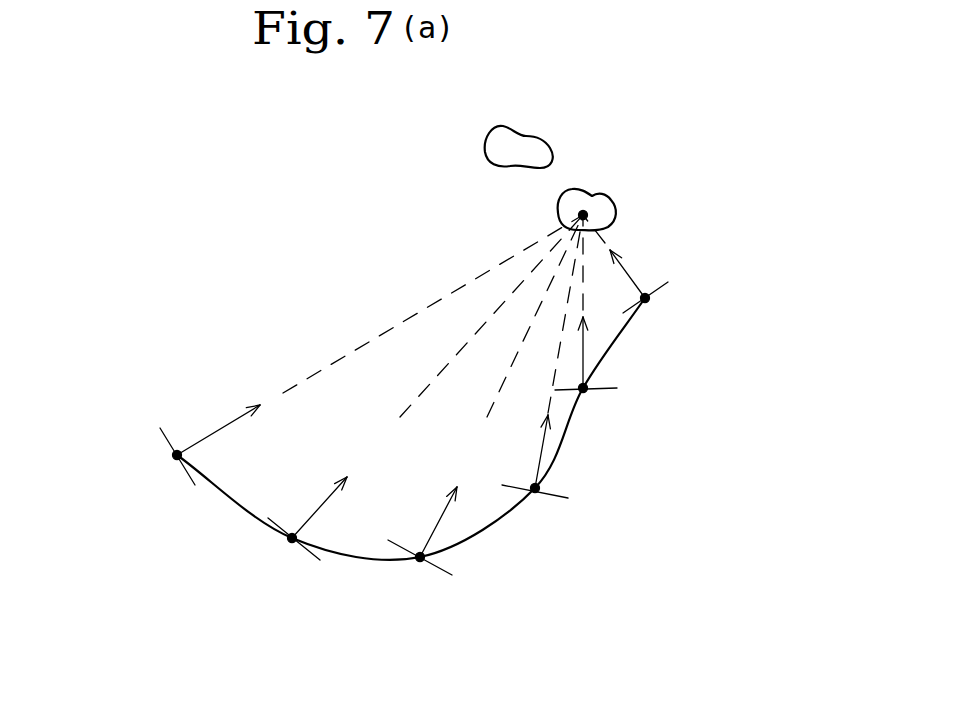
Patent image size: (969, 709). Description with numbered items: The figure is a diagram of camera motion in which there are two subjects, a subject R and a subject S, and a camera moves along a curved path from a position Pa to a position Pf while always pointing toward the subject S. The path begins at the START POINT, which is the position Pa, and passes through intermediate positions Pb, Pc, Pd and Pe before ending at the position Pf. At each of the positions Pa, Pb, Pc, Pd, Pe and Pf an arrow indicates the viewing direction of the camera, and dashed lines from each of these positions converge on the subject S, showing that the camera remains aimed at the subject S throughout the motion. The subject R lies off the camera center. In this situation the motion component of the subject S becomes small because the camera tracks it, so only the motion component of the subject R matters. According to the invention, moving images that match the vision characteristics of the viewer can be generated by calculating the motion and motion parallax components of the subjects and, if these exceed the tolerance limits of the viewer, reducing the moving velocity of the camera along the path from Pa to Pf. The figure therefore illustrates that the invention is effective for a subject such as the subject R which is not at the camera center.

The camera start position Pa is at (351, 352).
The intermediate camera position Pb is at (420, 403).
The intermediate camera position Pc is at (485, 410).
The intermediate camera position Pd is at (542, 380).
The intermediate camera position Pe is at (586, 328).
The camera end position Pf is at (627, 284).
The subject R is at (537, 141).
The subject S is at (607, 197).
The start point START POINT is at (130, 396).